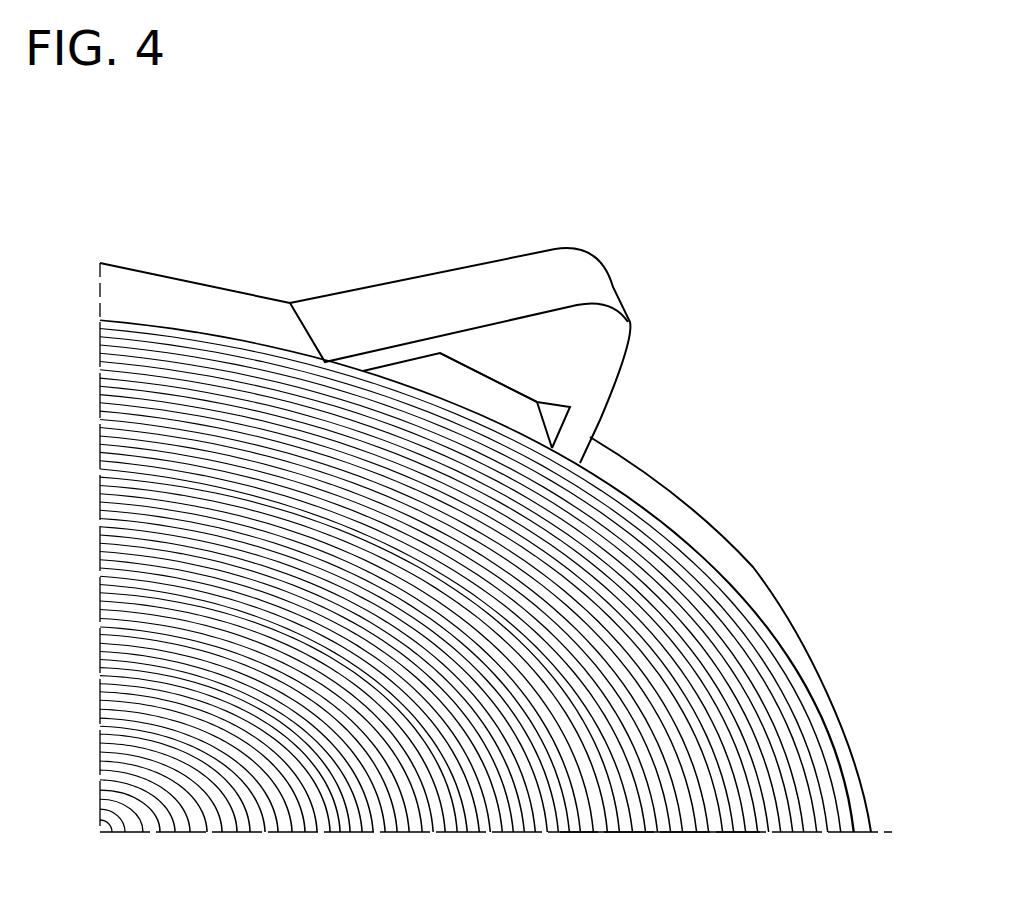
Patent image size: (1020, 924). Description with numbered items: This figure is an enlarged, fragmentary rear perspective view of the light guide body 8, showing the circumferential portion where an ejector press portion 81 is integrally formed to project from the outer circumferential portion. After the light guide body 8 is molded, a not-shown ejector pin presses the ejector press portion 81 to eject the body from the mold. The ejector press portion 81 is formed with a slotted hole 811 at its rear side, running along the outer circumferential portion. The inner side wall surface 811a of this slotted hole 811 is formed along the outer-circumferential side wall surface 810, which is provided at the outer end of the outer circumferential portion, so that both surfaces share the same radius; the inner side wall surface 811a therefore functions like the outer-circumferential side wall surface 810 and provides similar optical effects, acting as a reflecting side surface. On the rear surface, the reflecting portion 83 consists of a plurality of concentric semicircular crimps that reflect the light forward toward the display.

The light guide body 8 is at (810, 353).
The ejector press portion 81 is at (628, 348).
The outer-circumferential side wall surface 810 is at (753, 567).
The slotted hole 811 is at (562, 421).
The inner side wall surface 811a is at (487, 377).
The reflecting portion 83 is at (603, 835).